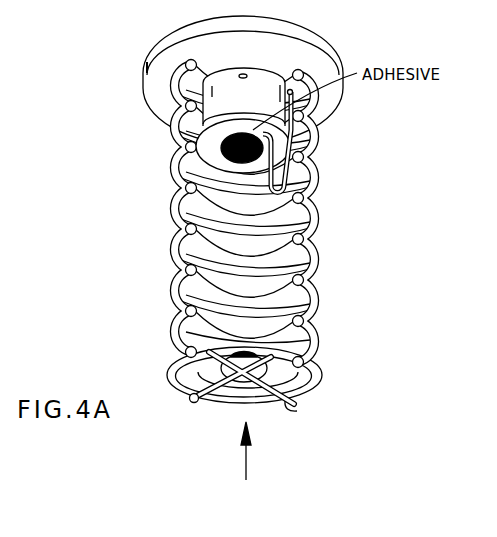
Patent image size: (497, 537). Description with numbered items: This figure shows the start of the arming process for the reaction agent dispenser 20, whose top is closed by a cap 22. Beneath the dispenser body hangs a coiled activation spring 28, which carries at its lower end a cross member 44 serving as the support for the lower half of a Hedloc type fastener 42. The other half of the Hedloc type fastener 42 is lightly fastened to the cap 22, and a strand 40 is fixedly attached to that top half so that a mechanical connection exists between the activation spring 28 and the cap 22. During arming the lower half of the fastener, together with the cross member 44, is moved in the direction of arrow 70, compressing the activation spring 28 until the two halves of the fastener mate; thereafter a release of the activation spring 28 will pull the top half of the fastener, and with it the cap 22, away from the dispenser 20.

The dispenser 20 is at (256, 89).
The cap 22 is at (215, 131).
The activation spring 28 is at (321, 183).
The strand 40 is at (278, 191).
The Hedloc type fastener 42 is at (262, 372).
The cross member 44 is at (236, 386).
The arrow 70 is at (252, 450).